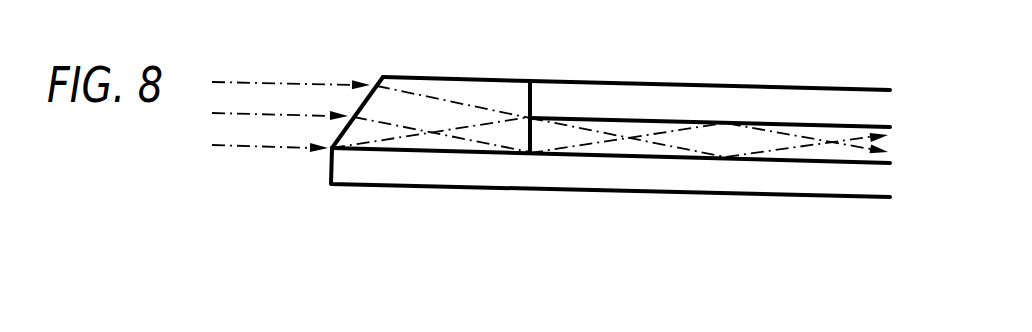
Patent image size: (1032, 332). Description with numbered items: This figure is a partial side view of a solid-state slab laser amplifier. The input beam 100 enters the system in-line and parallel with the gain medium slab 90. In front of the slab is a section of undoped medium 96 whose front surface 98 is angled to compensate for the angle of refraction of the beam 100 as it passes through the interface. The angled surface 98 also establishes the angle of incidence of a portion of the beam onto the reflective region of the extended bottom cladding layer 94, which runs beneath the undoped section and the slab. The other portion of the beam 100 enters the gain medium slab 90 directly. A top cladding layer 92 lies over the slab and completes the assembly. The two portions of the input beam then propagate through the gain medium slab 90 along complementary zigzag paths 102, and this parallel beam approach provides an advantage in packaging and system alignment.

The gain medium slab 90 is at (617, 118).
The top cladding layer 92 is at (826, 87).
The extended bottom cladding layer 94 is at (766, 196).
The section of undoped medium 96 is at (418, 77).
The front surface 98 is at (360, 108).
The input beam 100 is at (265, 148).
The zigzag paths 102 is at (883, 145).